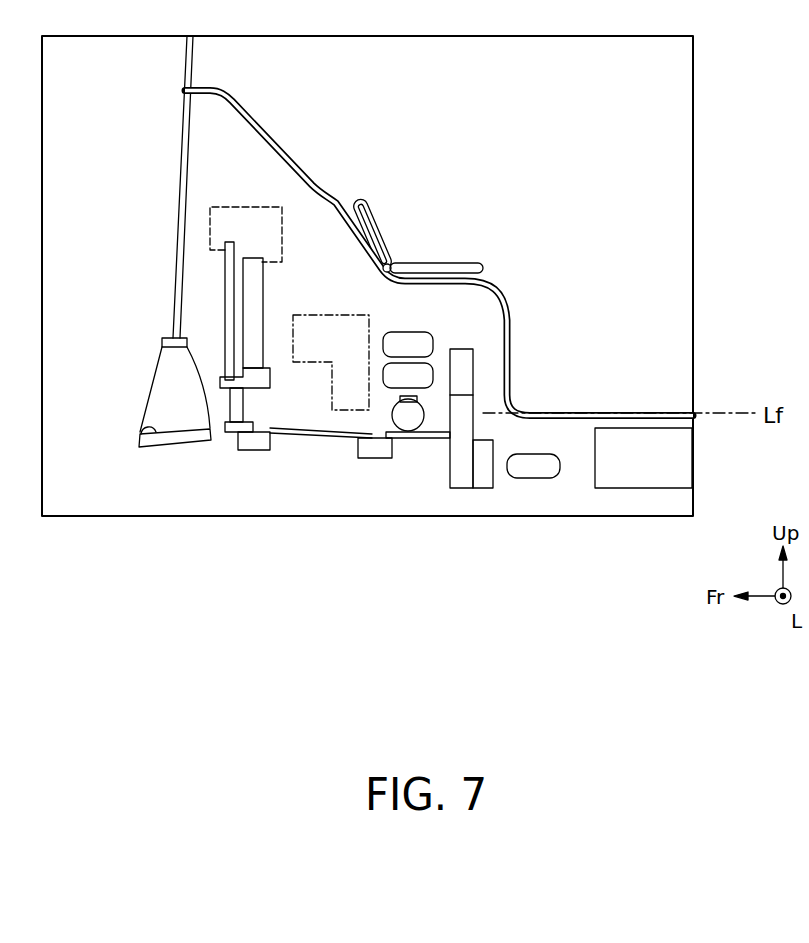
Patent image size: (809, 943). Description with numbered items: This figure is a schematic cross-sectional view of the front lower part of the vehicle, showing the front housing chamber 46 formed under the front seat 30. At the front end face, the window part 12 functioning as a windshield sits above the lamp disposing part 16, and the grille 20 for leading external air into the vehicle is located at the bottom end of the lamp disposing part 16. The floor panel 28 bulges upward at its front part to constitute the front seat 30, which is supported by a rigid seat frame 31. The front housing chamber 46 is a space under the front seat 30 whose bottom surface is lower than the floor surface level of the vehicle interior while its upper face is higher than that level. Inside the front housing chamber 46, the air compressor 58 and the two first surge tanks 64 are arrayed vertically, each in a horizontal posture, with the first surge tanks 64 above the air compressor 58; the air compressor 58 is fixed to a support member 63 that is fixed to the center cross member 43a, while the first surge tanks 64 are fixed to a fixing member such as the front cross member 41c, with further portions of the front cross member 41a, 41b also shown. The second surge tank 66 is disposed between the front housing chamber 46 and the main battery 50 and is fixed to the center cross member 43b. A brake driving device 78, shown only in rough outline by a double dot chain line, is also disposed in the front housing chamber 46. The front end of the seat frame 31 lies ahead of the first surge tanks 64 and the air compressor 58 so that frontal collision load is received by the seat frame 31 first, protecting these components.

The window part 12 is at (183, 57).
The lamp disposing part 16 is at (172, 163).
The grille 20 is at (140, 432).
The floor panel 28 is at (495, 287).
The front seat 30 is at (467, 261).
The seat frame 31 is at (417, 263).
The front housing chamber 46 is at (327, 255).
The brake driving device 78 is at (318, 313).
The front cross member 41a is at (253, 452).
The front cross member 41b is at (372, 460).
The front cross member 41c is at (475, 366).
The center cross member 43a is at (461, 490).
The center cross member 43b is at (487, 490).
The air compressor 58 is at (406, 422).
The support member 63 is at (432, 440).
The first surge tank 64 is at (436, 366).
The main battery 50 is at (647, 428).
The second surge tank 66 is at (548, 480).